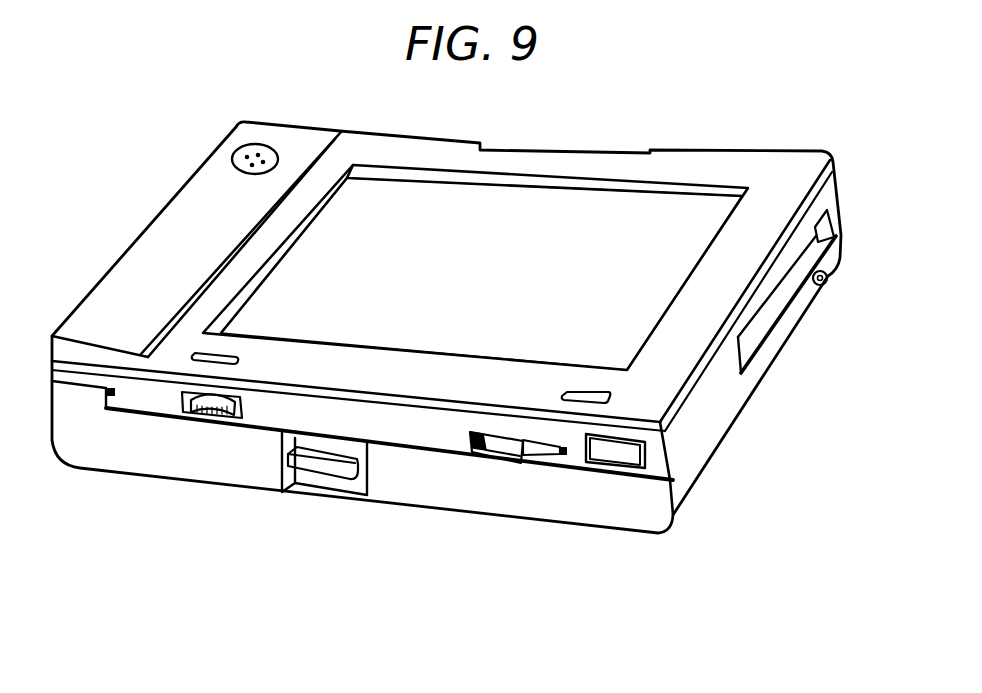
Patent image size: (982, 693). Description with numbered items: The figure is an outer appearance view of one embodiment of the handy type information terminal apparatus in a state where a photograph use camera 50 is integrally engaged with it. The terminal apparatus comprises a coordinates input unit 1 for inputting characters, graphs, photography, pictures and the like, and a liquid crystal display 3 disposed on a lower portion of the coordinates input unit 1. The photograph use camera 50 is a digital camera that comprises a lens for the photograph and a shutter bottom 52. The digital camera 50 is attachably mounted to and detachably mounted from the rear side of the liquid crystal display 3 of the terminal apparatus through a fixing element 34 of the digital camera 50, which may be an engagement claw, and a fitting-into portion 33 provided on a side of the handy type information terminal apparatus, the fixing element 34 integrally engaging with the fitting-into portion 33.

The coordinates input unit 1 is at (538, 203).
The liquid crystal display 3 is at (647, 222).
The fitting-into portion 33 is at (490, 457).
The fixing element 34 is at (77, 388).
The photograph use camera 50 is at (177, 453).
The shutter bottom 52 is at (827, 284).